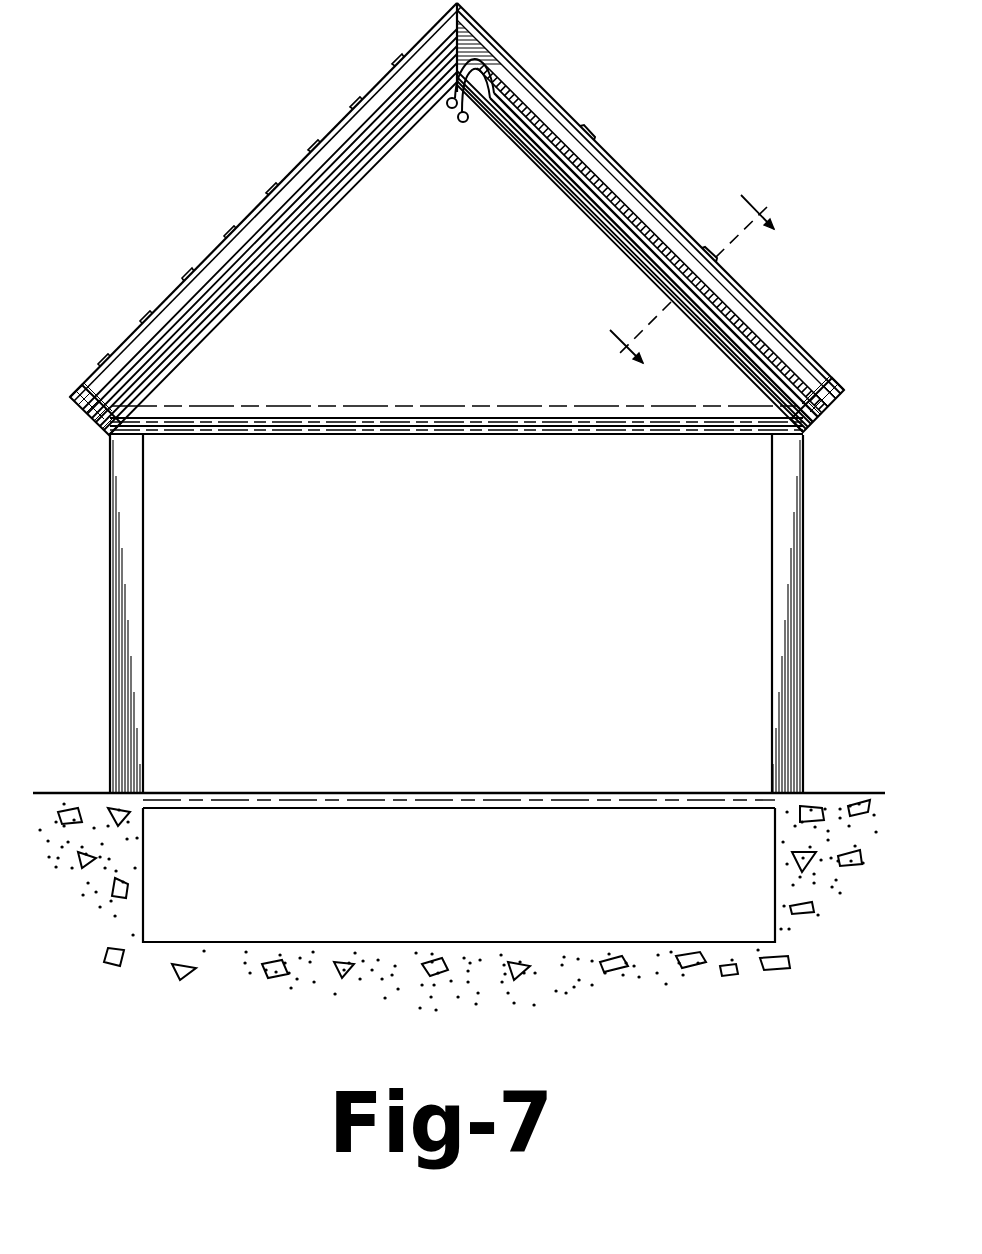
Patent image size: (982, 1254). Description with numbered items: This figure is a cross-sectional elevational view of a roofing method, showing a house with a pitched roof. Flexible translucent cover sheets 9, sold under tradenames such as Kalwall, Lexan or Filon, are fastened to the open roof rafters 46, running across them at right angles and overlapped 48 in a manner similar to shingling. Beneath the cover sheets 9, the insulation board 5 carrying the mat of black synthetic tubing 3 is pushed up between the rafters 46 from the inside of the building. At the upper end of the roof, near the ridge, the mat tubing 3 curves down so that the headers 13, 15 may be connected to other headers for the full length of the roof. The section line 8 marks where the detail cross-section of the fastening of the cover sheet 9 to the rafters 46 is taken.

The mat of black synthetic tubing 3 is at (533, 106).
The insulation board 5 is at (577, 170).
The section line 8- 8 is at (682, 266).
The flexible translucent cover sheet 9 is at (621, 170).
The header 13 is at (449, 108).
The header 15 is at (463, 122).
The roof rafters 46 is at (299, 245).
The overlap 48 is at (588, 134).